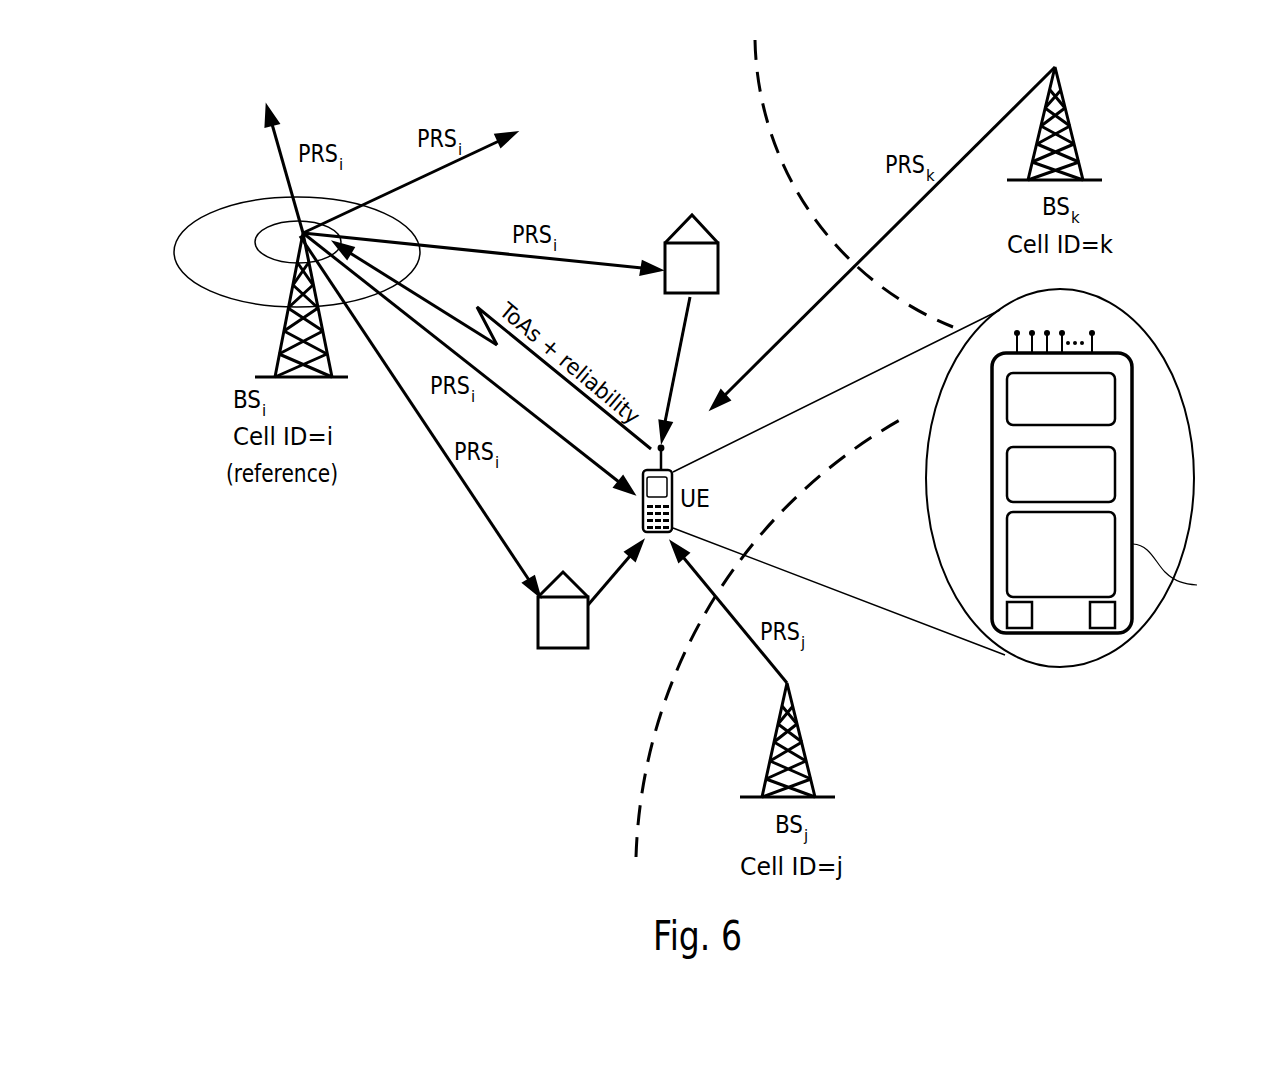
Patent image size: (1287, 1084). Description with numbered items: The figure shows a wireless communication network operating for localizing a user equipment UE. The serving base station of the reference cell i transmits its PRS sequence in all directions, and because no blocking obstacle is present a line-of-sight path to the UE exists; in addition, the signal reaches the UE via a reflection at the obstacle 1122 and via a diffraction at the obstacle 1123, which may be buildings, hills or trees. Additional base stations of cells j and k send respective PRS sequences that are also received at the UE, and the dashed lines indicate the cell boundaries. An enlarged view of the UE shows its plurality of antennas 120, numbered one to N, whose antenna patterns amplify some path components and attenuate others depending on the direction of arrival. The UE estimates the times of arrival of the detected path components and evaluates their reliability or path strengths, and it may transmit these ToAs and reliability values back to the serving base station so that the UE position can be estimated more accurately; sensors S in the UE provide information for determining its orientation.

The obstacle 1122 is at (694, 266).
The obstacle 1123 is at (565, 622).
The antennas 120 is at (1100, 325).